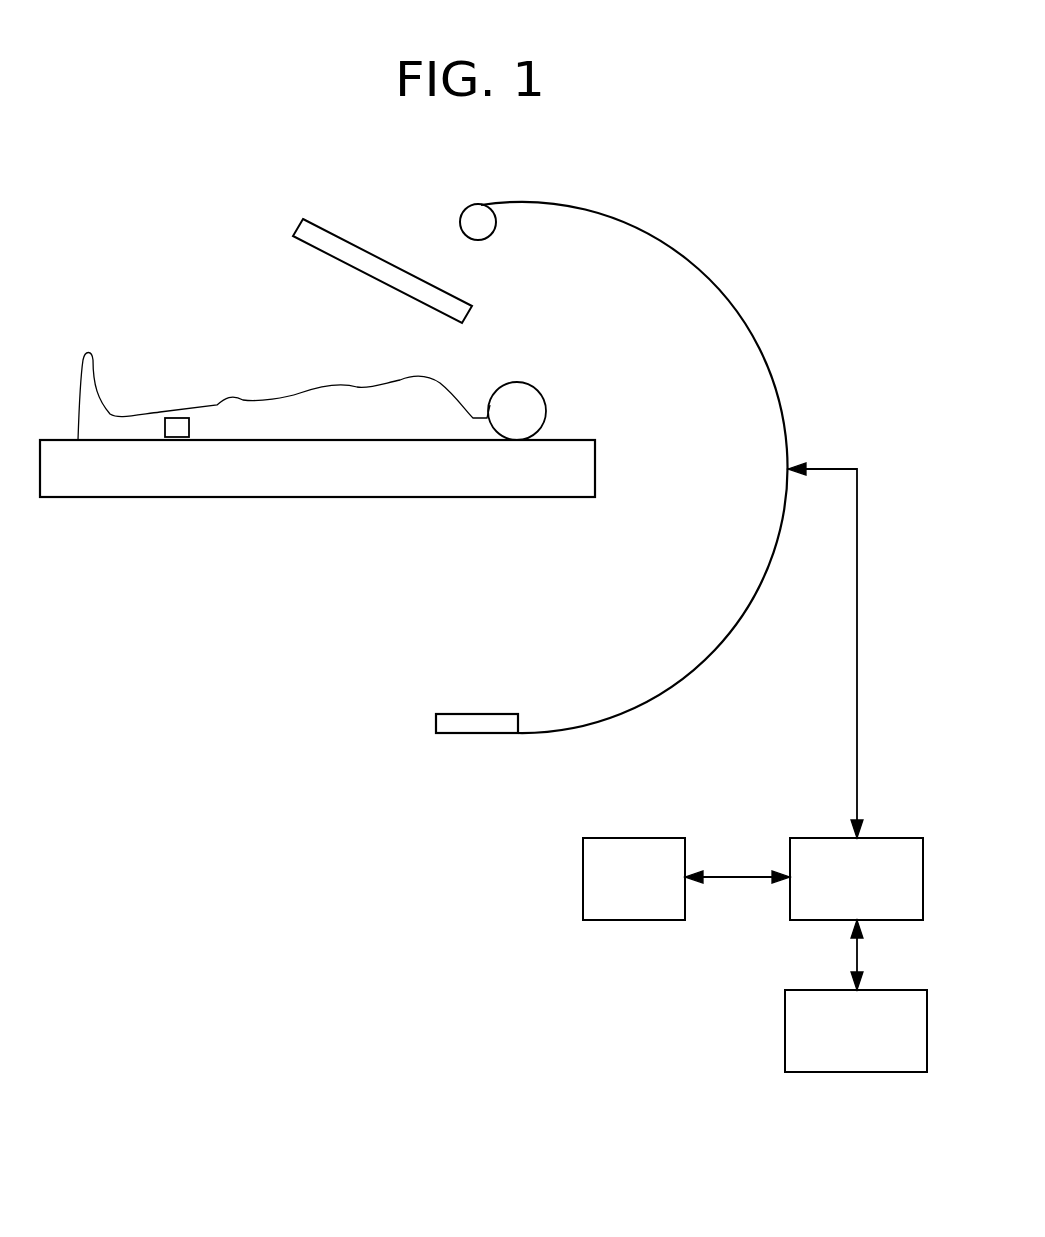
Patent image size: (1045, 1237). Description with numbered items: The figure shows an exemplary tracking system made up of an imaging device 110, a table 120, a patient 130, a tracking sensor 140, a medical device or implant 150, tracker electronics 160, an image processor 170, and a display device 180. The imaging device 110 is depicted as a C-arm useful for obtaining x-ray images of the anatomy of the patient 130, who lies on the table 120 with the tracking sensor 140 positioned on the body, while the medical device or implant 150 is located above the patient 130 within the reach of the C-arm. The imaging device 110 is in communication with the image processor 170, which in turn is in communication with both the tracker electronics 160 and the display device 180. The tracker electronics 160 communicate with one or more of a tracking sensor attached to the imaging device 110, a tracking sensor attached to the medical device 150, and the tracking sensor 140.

The imaging device 110 is at (762, 357).
The table 120 is at (137, 500).
The patient 130 is at (547, 410).
The tracking sensor 140 is at (175, 418).
The medical device or implant 150 is at (350, 242).
The tracker electronics 160 is at (785, 1027).
The image processor 170 is at (790, 855).
The display device 180 is at (583, 865).